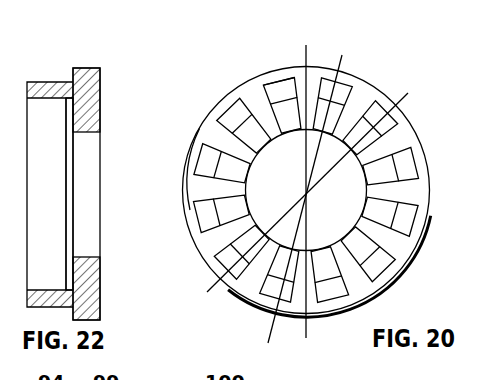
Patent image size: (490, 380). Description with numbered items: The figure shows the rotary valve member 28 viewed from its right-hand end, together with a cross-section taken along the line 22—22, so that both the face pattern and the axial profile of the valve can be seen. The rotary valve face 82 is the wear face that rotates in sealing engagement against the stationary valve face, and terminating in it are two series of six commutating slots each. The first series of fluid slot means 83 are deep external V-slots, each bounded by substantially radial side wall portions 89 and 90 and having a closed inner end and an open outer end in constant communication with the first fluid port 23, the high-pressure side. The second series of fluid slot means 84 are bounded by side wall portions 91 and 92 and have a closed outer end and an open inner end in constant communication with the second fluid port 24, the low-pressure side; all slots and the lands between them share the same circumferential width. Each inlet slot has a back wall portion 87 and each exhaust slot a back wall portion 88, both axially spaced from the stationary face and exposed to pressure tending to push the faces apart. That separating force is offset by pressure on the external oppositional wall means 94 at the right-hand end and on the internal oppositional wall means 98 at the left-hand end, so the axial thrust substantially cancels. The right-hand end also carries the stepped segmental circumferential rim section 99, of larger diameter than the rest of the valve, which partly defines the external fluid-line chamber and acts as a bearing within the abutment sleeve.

In FIG. 22, the rotary valve member 28 is at (101, 88).
In FIG. 20, the rotary valve member 28 is at (416, 262).
In FIG. 22, the external oppositional wall means 94 is at (72, 83).
In FIG. 22, the stepped segmental circumferential rim section 99 is at (87, 68).
In FIG. 22, the internal oppositional wall means 98 is at (67, 112).
In FIG. 20, the rotary valve face 82 is at (405, 128).
In FIG. 20, the fluid slot means of the first series 83 is at (285, 80).
In FIG. 20, the fluid slot means of the second series 84 is at (232, 120).
In FIG. 20, the back wall portion 87 is at (215, 178).
In FIG. 20, the back wall portion 88 is at (215, 257).
In FIG. 20, the side wall portion 89 is at (277, 96).
In FIG. 20, the side wall portion 90 is at (291, 78).
In FIG. 20, the side wall portion 91 is at (200, 128).
In FIG. 20, the side wall portion 92 is at (247, 110).
In FIG. 20, the section line 22— 22 is at (335, 190).
In FIG. 20, the first fluid port 23 is at (325, 212).
In FIG. 20, the second fluid port 24 is at (332, 208).